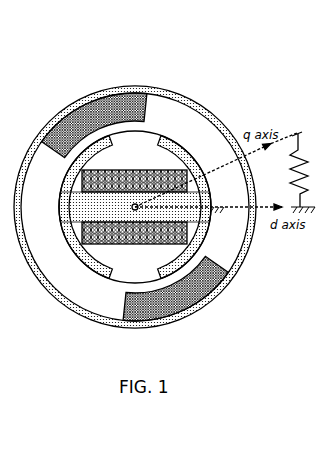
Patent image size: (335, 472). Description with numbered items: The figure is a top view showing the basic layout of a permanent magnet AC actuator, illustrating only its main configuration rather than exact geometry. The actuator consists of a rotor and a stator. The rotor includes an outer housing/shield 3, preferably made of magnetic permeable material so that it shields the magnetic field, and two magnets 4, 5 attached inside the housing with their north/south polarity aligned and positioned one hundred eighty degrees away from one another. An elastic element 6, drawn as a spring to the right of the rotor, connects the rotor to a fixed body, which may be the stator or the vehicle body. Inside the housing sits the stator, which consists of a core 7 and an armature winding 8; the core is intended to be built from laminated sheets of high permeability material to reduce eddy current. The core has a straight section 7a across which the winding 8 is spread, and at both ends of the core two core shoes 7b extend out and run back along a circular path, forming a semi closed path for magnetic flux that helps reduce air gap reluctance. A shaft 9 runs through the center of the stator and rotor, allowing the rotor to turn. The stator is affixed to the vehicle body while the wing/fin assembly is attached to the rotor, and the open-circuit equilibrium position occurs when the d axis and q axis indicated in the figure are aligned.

The housing/shield 3 is at (150, 87).
The magnet 4 is at (98, 97).
The magnet 5 is at (205, 295).
The elastic element 6 is at (300, 148).
The core 7 is at (73, 200).
The straight section 7a is at (115, 200).
The core shoe 7b is at (172, 150).
The armature winding 8 is at (137, 247).
The shaft 9 is at (132, 207).